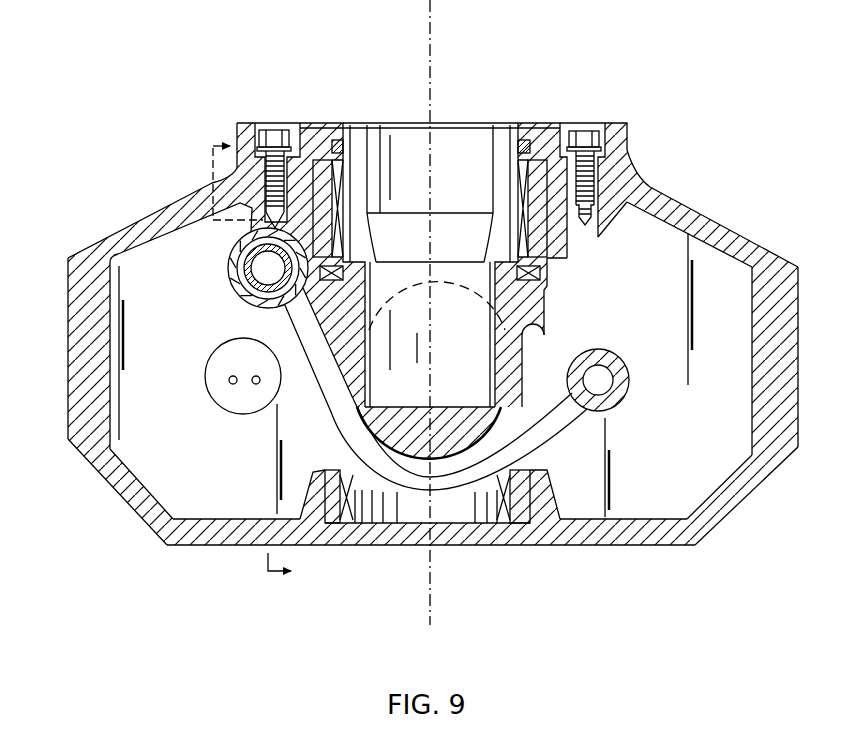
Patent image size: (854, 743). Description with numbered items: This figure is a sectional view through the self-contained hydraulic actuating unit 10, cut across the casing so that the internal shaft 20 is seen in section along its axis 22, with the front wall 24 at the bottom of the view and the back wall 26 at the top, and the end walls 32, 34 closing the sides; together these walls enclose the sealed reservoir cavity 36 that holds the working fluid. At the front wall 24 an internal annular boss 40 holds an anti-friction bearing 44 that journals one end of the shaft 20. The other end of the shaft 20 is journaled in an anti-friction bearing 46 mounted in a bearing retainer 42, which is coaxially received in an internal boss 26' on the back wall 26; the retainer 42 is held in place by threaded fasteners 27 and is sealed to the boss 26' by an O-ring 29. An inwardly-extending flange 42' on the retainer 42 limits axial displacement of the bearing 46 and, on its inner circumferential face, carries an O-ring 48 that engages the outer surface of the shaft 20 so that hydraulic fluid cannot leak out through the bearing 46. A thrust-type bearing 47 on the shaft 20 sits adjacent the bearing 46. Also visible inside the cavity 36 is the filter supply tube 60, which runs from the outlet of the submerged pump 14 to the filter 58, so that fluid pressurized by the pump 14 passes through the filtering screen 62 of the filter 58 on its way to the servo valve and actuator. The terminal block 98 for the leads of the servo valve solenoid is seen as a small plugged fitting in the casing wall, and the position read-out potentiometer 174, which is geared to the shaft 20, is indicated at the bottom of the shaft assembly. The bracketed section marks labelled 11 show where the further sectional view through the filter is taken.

The hydraulic actuating unit 10 is at (703, 150).
The section line 11- 11 is at (250, 359).
The pump 14 is at (617, 383).
The shaft 20 is at (420, 329).
The axis 22 is at (437, 47).
The front wall 24 is at (624, 548).
The back wall 26 is at (703, 168).
The internal boss 26' is at (601, 230).
The threaded fasteners 27 is at (267, 128).
The O-ring 29 is at (557, 172).
The end wall 32 is at (760, 380).
The end wall 34 is at (100, 413).
The reservoir cavity 36 is at (665, 457).
The internal annular boss 40 is at (547, 468).
The bearing retainer 42 is at (321, 112).
The inwardly-extending flange 42' is at (354, 143).
The anti-friction bearing 44 is at (514, 514).
The anti-friction bearing 46 is at (528, 280).
The thrust-type bearing 47 is at (550, 278).
The O-ring 48 is at (531, 147).
The filter 58 is at (247, 306).
The filter supply tube 60 is at (337, 432).
The screen 62 is at (232, 277).
The terminal block 98 is at (242, 384).
The position read-out potentiometer 174 is at (414, 433).